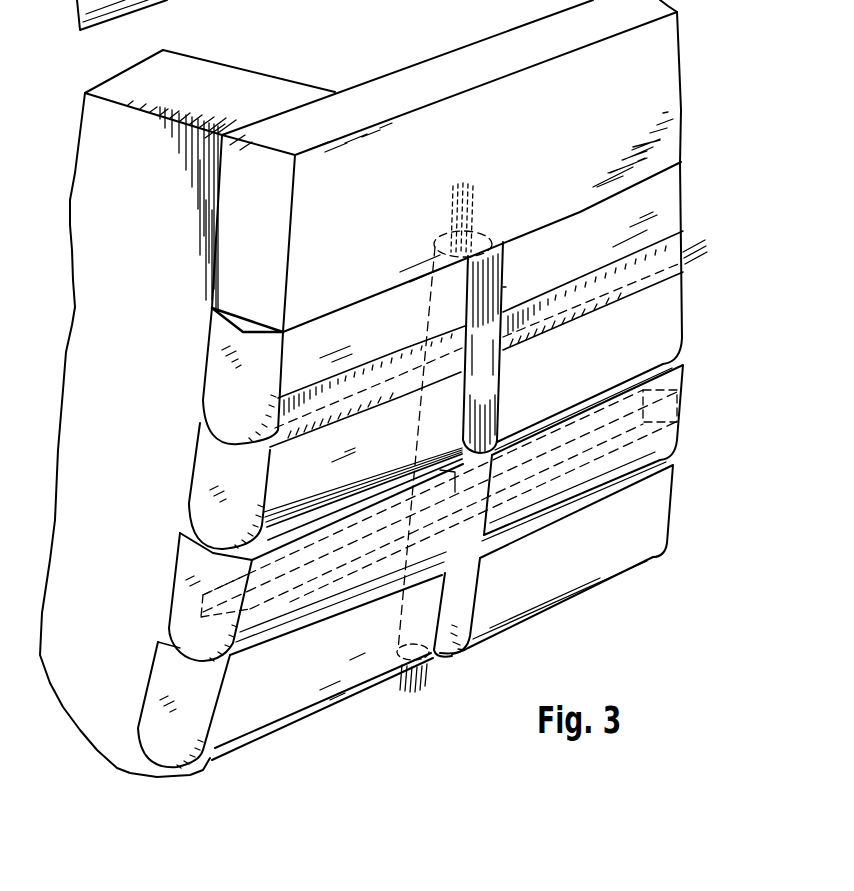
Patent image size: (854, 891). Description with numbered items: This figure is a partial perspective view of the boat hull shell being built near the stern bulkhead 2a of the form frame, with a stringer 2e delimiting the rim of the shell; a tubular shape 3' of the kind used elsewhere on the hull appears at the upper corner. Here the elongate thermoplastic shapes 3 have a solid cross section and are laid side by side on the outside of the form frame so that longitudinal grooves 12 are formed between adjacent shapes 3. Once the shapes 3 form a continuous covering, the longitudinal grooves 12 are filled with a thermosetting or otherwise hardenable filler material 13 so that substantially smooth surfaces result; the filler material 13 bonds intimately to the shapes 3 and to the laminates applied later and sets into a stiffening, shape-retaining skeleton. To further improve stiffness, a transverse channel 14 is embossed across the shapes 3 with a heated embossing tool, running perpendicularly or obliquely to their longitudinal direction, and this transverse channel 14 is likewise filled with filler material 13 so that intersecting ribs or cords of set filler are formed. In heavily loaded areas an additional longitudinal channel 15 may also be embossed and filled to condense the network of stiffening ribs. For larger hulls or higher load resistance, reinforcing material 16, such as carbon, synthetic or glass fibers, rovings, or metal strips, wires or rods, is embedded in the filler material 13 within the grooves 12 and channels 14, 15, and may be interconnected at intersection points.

The stern bulkhead 2a is at (276, 87).
The stringer 2e is at (469, 66).
The shape 3 is at (192, 538).
The tubular shape 3' is at (146, 16).
The longitudinal groove 12 is at (192, 532).
The filler material 13 is at (490, 266).
The transverse channel 14 is at (505, 288).
The additional longitudinal channel 15 is at (358, 560).
The reinforcing material 16 is at (480, 220).